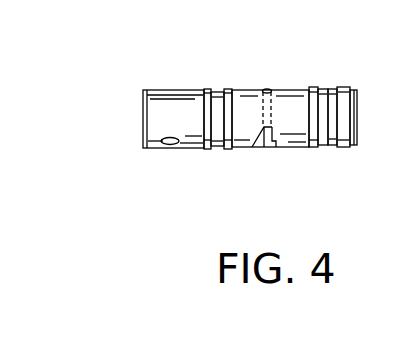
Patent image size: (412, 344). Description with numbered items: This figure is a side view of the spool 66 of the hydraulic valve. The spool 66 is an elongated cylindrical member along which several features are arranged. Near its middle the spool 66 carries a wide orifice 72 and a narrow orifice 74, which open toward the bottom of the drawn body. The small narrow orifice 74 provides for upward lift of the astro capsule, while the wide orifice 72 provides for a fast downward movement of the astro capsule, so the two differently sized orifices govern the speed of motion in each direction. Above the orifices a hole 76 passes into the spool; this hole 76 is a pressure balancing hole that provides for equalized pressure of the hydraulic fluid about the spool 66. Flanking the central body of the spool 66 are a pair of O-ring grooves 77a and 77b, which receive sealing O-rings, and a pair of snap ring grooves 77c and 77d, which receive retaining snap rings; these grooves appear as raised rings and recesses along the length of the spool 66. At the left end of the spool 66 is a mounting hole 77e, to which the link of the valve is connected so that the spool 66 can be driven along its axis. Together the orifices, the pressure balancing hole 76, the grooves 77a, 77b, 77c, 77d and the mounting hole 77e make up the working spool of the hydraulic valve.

The spool 66 is at (122, 224).
The wide orifice 72 is at (273, 143).
The narrow orifice 74 is at (262, 131).
The hole 76 is at (269, 89).
The O-ring groove 77a is at (229, 91).
The O-ring groove 77b is at (313, 89).
The snap ring groove 77c is at (207, 89).
The snap ring groove 77d is at (340, 146).
The mounting hole 77e is at (172, 144).